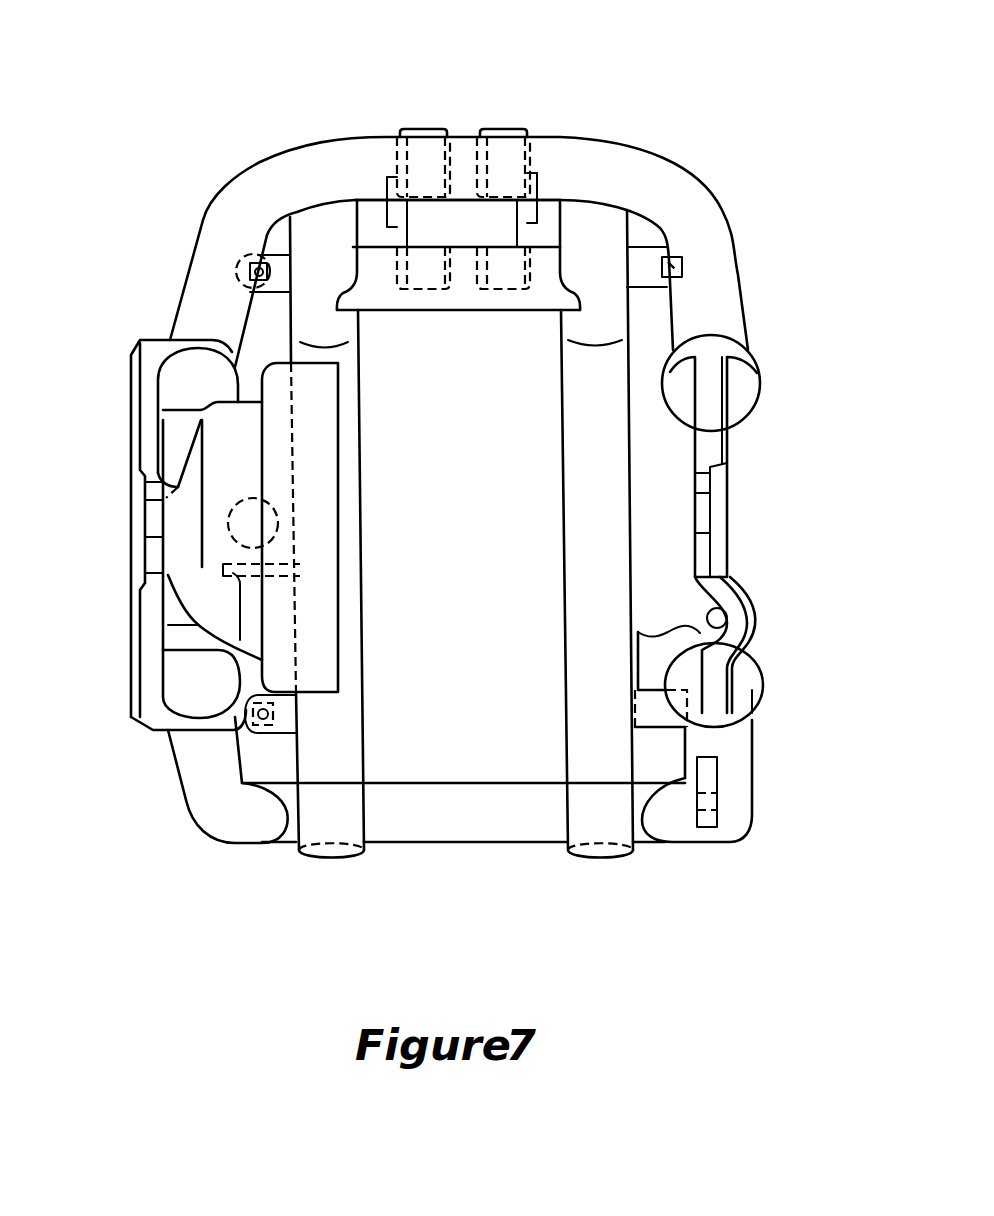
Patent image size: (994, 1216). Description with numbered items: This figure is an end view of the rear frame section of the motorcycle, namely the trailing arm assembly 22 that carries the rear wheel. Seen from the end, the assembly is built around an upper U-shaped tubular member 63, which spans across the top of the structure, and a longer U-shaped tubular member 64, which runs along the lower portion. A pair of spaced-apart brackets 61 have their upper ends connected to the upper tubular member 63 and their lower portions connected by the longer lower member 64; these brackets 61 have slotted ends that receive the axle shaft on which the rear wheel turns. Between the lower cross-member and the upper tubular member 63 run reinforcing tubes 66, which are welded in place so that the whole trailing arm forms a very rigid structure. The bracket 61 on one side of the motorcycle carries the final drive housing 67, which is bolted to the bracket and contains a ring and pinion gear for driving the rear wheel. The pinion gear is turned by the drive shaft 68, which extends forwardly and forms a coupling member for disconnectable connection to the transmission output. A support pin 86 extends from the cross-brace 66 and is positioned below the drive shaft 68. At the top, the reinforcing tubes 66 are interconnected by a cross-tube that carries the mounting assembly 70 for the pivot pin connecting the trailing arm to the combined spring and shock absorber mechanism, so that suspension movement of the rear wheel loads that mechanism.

The trailing arm assembly 22 is at (678, 82).
The bracket 61 is at (727, 452).
The U-shaped tubular member 63 is at (580, 136).
The longer U-shaped tubular member 64 is at (183, 800).
The reinforcing tube 66 is at (562, 576).
The final drive housing 67 is at (328, 537).
The drive shaft 68 is at (230, 512).
The mounting assembly 70 is at (492, 128).
The support pin 86 is at (250, 580).